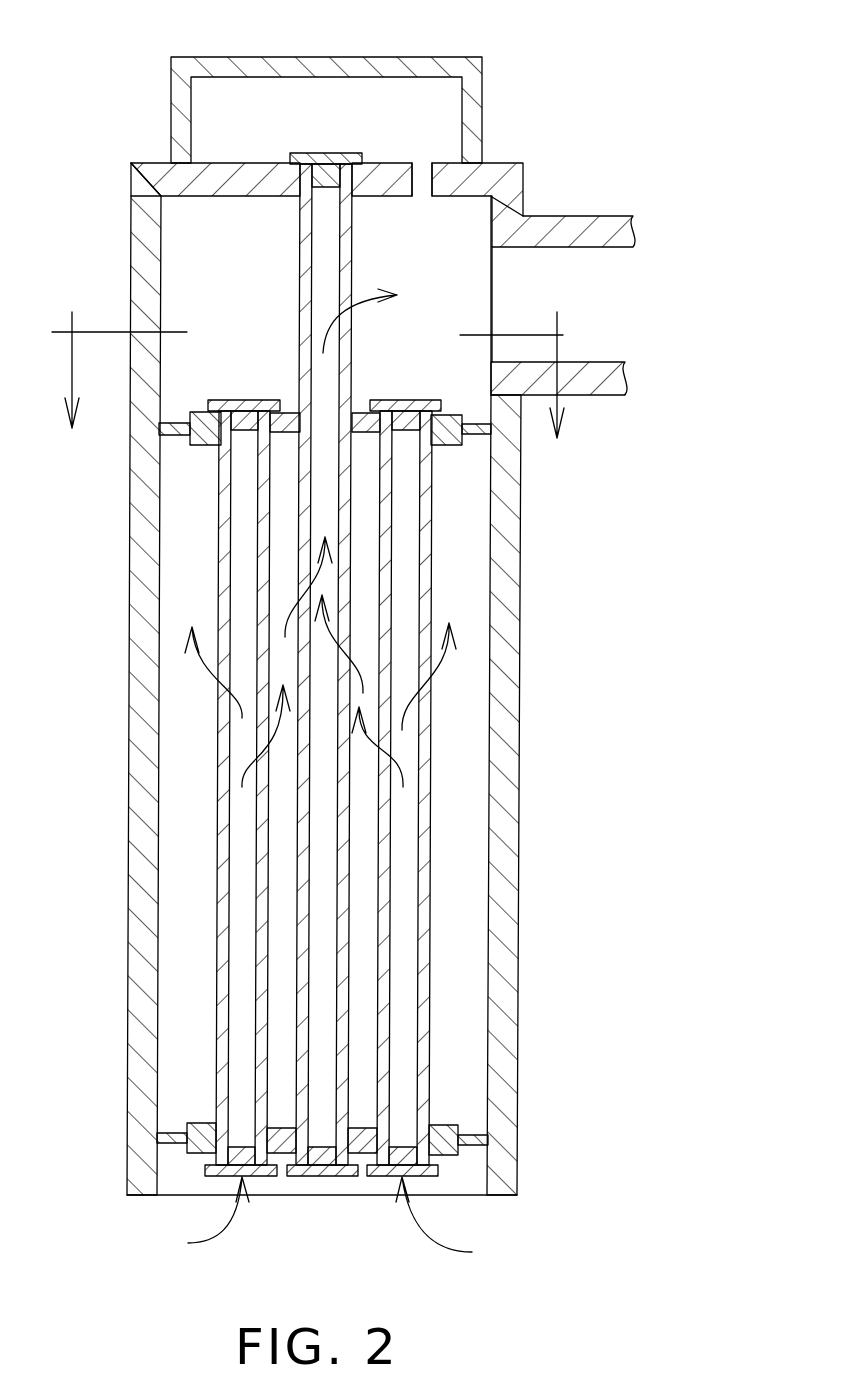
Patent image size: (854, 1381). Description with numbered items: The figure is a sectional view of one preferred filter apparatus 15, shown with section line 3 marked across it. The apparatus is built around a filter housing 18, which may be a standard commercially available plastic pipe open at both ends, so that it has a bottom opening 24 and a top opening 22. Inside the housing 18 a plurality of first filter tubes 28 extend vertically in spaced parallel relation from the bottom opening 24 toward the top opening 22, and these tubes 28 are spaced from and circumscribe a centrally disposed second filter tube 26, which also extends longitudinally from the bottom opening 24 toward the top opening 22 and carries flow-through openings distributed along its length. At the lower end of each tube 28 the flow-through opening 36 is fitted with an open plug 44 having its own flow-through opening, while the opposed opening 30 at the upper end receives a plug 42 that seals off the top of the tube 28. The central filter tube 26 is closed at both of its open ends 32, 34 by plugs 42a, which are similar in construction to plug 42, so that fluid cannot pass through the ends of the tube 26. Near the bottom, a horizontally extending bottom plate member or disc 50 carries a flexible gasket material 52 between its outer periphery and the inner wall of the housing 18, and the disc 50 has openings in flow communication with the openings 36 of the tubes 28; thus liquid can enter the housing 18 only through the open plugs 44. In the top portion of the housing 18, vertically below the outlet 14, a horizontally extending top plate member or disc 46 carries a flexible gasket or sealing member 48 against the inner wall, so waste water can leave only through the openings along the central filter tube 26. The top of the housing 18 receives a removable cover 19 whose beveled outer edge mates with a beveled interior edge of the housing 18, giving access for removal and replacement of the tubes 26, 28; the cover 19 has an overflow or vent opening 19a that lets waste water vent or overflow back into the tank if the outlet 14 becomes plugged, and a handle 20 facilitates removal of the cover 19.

The section line 3- 3 is at (312, 364).
The outlet 14 is at (620, 276).
The filter apparatus 15 is at (573, 138).
The filter housing 18 is at (523, 640).
The removable cover 19 is at (158, 163).
The overflow or vent opening 19a is at (422, 165).
The handle 20 is at (345, 57).
The top opening 22 is at (438, 217).
The bottom opening 24 is at (463, 1182).
The second filter tube 26 is at (350, 917).
The first filter tubes 28 is at (215, 812).
The opposed opening 30 is at (400, 437).
The open end 32 is at (327, 203).
The open end 34 is at (322, 1140).
The flow-through opening 36 is at (405, 1135).
The plug 42 is at (395, 400).
The plugs 42a is at (300, 153).
The open plug 44 is at (217, 1177).
The top plate member or disc 46 is at (203, 446).
The flexible gasket or sealing member 48 is at (176, 423).
The bottom plate member or disc 50 is at (450, 1123).
The flexible gasket material 52 is at (178, 1137).